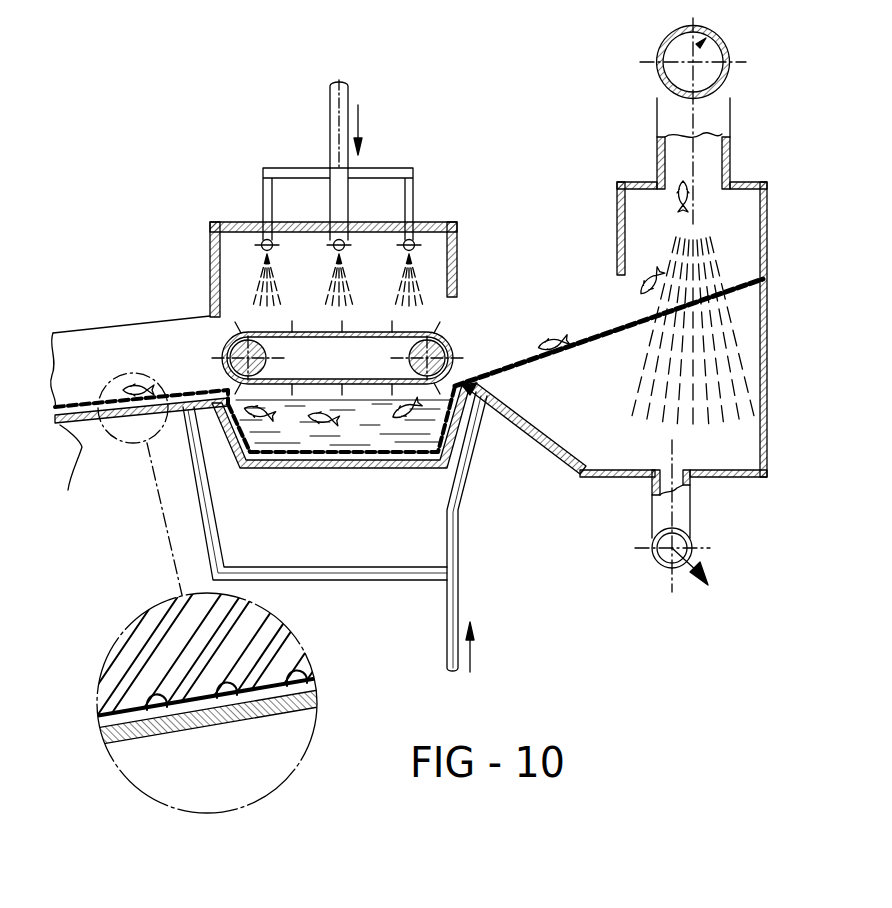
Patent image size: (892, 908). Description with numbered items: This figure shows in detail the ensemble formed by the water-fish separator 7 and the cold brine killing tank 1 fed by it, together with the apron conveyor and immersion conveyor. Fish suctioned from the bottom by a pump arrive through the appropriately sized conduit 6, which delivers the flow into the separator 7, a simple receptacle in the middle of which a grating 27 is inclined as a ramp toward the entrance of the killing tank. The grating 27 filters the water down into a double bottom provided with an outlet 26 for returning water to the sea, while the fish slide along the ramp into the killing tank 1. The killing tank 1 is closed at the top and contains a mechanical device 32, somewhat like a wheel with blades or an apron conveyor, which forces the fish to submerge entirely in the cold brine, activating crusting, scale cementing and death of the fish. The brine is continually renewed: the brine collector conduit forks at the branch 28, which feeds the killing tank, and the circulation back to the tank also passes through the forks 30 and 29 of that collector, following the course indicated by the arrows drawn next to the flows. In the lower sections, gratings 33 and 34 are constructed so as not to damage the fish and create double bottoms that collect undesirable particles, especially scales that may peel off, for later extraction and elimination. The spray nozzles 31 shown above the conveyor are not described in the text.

The killing tank 1 is at (437, 222).
The conduit 6 is at (663, 98).
The water-fish separator 7 is at (613, 208).
The outlet 26 is at (697, 543).
The grating 27 is at (603, 340).
The branch 28 is at (453, 593).
The fork 29 is at (400, 576).
The fork 30 is at (343, 97).
The spray nozzles 31 is at (333, 250).
The mechanical device 32 is at (444, 343).
The grating 33 is at (300, 452).
The grating 34 is at (82, 447).